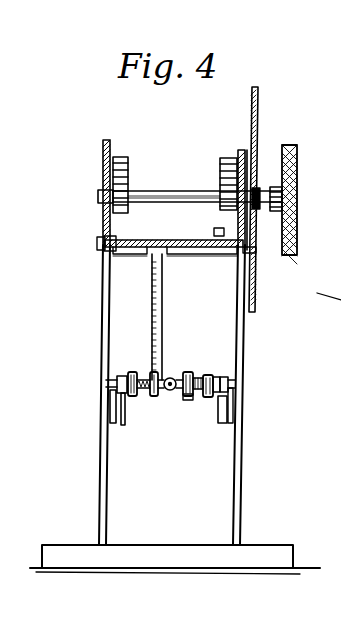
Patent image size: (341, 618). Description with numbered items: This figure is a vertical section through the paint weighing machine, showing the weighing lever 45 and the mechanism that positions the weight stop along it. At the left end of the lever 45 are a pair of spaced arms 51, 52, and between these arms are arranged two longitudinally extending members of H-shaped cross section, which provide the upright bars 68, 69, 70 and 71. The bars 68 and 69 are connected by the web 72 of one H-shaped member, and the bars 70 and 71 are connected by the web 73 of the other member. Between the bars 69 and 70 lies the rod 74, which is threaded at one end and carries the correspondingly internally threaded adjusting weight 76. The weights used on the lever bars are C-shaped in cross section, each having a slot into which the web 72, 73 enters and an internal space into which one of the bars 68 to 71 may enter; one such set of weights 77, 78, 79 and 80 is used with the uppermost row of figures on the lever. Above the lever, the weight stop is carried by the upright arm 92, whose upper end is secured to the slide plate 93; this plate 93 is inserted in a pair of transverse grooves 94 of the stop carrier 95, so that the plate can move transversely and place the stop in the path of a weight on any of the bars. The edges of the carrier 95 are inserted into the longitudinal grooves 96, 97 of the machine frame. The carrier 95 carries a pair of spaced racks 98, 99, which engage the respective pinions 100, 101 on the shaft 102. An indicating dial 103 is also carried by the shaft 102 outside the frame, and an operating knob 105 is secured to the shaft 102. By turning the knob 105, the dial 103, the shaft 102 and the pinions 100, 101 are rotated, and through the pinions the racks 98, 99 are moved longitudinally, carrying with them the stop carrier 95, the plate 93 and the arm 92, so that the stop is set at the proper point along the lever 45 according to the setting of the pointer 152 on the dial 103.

The weighing lever 45 is at (122, 376).
The arm 51 is at (115, 381).
The arm 52 is at (228, 379).
The upright bar 68 is at (134, 396).
The upright bar 69 is at (156, 396).
The upright bar 70 is at (180, 399).
The upright bar 71 is at (207, 398).
The web 72 is at (148, 376).
The web 73 is at (201, 377).
The rod 74 is at (176, 378).
The adjusting weight 76 is at (170, 378).
The weight 77 is at (119, 398).
The weight 78 is at (145, 397).
The weight 79 is at (190, 392).
The weight 80 is at (212, 381).
The upright arm 92 is at (161, 287).
The slide plate 93 is at (171, 253).
The transverse grooves 94 is at (132, 251).
The stop carrier 95 is at (166, 242).
The longitudinal groove 96 is at (101, 243).
The longitudinal groove 97 is at (249, 253).
The rack 98 is at (133, 241).
The rack 99 is at (218, 232).
The pinion 100 is at (125, 160).
The pinion 101 is at (228, 158).
The shaft 102 is at (167, 199).
The indicating dial 103 is at (257, 112).
The operating knob 105 is at (295, 237).
The pointer 152 is at (260, 190).